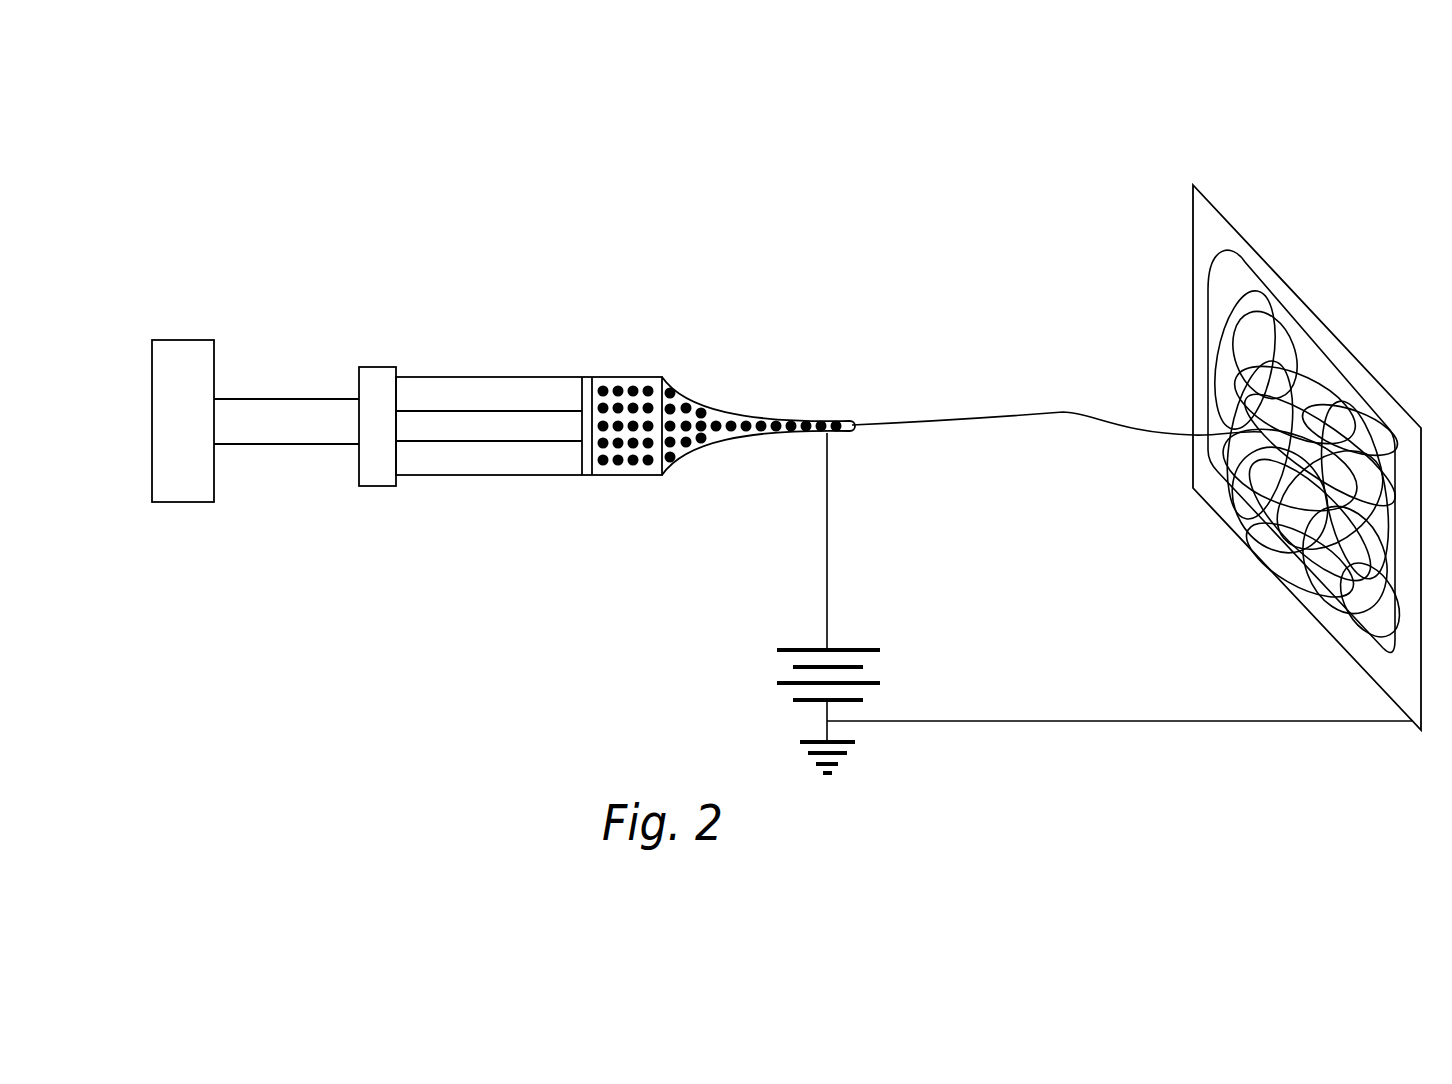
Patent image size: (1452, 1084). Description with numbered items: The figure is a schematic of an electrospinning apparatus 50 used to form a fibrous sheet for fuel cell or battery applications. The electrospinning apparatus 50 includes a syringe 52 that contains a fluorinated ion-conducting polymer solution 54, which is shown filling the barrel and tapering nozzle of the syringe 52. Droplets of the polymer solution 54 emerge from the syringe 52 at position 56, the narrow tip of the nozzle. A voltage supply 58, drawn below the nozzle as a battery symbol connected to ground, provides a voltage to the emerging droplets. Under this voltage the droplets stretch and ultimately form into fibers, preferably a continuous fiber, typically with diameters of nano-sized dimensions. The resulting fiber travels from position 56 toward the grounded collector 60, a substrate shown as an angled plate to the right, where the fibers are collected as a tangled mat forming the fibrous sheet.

The electrospinning apparatus 50 is at (365, 228).
The syringe 52 is at (498, 373).
The fluorinated ion-conducting polymer solution 54 is at (633, 400).
The position 56 is at (857, 418).
The voltage supply 58 is at (785, 675).
The grounded collector 60 is at (1198, 270).